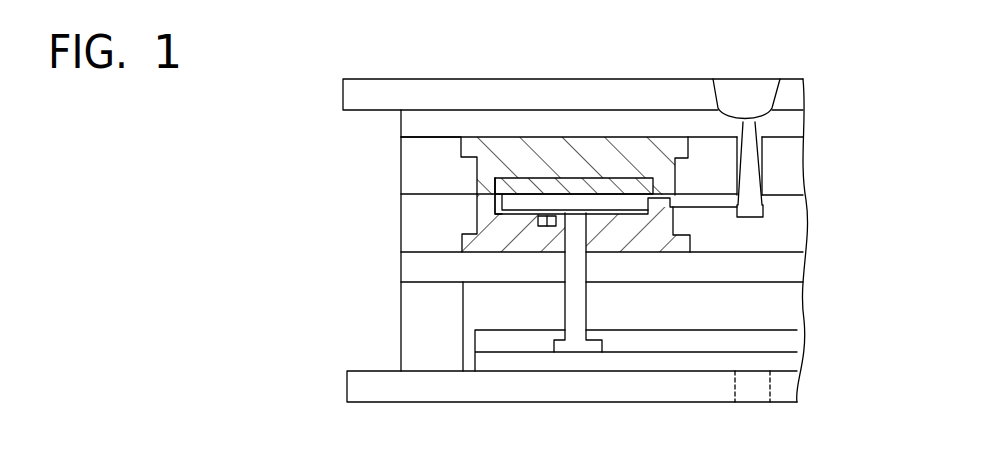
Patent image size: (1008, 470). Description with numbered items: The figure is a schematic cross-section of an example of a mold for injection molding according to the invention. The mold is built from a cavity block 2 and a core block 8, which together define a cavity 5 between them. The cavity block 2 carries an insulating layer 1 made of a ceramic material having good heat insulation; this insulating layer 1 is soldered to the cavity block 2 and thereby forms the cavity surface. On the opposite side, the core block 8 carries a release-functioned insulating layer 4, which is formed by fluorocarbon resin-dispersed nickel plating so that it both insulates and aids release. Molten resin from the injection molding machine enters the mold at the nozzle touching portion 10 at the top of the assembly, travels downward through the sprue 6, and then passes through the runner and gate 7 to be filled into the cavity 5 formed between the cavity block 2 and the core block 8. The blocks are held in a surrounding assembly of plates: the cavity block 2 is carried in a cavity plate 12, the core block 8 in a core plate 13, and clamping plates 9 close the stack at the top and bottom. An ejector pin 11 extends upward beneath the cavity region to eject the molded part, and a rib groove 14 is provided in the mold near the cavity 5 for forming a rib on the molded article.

The insulating layer 1 is at (563, 153).
The cavity block 2 is at (620, 147).
The release-functioned insulating layer 4 is at (520, 237).
The cavity 5 is at (503, 190).
The sprue 6 is at (748, 178).
The runner and gate 7 is at (697, 202).
The core block 8 is at (503, 246).
The clamping plate 9 is at (440, 97).
The nozzle touching portion 10 is at (742, 103).
The ejector pin 11 is at (577, 282).
The cavity plate 12 is at (412, 160).
The core plate 13 is at (423, 212).
The rib groove 14 is at (538, 228).